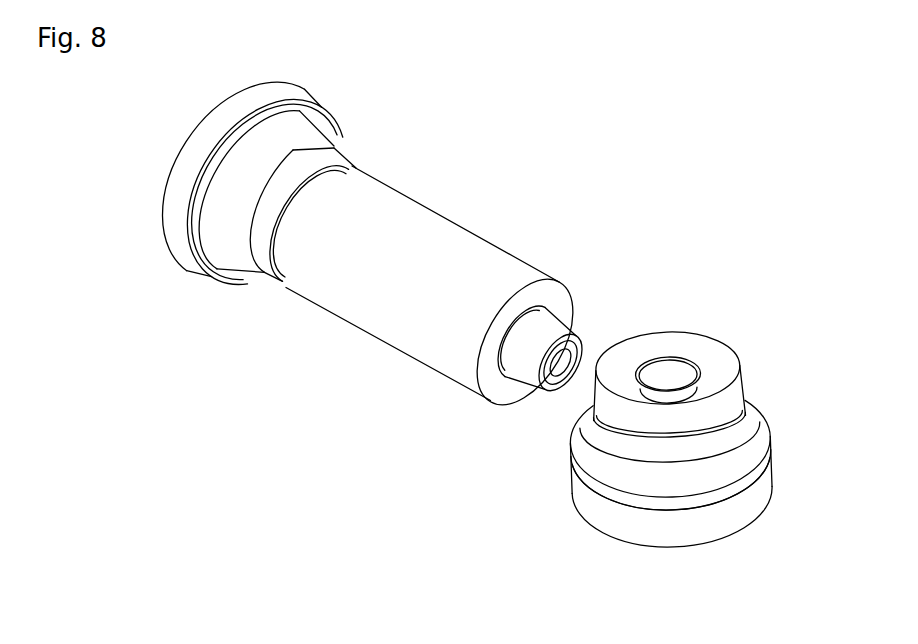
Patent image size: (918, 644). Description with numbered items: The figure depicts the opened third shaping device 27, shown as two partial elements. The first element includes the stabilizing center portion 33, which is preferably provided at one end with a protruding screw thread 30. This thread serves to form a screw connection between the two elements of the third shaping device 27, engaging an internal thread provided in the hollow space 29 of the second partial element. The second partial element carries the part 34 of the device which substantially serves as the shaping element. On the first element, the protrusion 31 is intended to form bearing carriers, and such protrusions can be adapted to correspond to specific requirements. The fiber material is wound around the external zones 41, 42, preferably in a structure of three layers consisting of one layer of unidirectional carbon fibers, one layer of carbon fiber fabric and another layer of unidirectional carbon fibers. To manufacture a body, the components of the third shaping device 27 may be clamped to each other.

The third shaping device 27 is at (436, 184).
The hollow space 29 is at (685, 369).
The protruding screw thread 30 is at (557, 320).
The protrusion 31 is at (296, 148).
The stabilizing center portion 33 is at (382, 295).
The shaping element part 34 is at (692, 508).
The external zone 41 is at (229, 256).
The external zone 42 is at (624, 470).